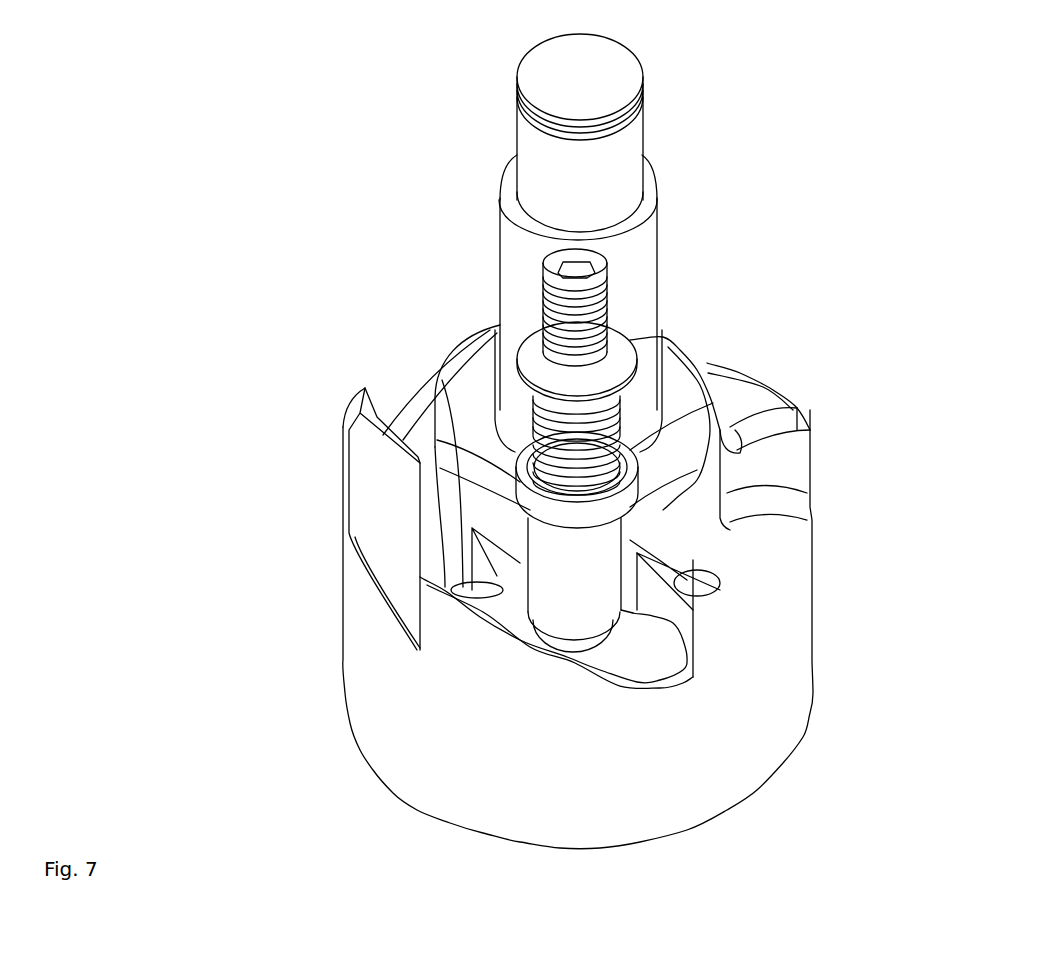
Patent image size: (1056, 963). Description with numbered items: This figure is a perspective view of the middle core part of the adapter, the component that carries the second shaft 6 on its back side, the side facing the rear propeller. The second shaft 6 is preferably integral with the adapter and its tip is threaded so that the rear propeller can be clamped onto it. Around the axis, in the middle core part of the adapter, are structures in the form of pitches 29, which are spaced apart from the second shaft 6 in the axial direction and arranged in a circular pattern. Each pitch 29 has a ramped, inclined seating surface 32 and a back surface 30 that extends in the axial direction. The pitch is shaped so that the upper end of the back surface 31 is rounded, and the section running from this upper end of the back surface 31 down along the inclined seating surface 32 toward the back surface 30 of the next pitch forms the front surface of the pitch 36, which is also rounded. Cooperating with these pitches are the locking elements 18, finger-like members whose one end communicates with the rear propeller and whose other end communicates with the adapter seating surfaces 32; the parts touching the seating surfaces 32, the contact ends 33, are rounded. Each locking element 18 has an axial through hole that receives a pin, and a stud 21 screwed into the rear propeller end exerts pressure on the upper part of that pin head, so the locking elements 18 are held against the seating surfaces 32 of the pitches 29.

The second shaft 6 is at (627, 140).
The stud 21 is at (600, 297).
The upper end of the back surface 31 is at (375, 428).
The seating surface 32 is at (378, 512).
The pitch 29 is at (352, 533).
The back surface 30 is at (782, 457).
The locking element 18 is at (568, 583).
The front surface of the pitch 36 is at (672, 637).
The contact end 33 is at (570, 643).